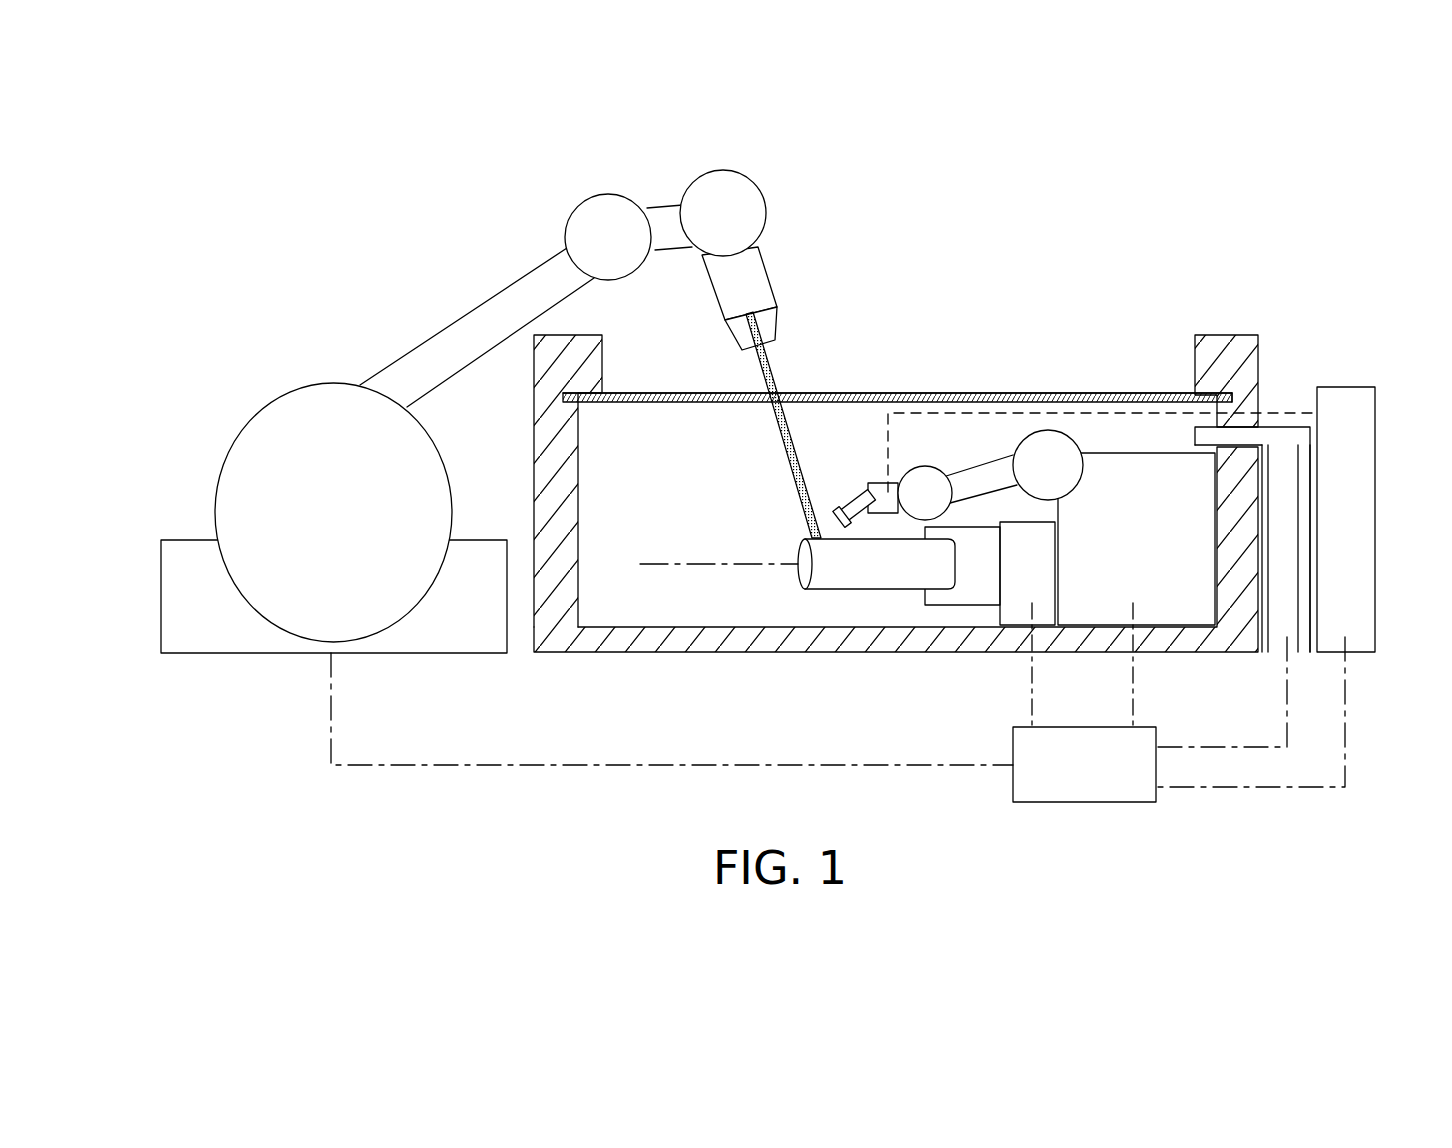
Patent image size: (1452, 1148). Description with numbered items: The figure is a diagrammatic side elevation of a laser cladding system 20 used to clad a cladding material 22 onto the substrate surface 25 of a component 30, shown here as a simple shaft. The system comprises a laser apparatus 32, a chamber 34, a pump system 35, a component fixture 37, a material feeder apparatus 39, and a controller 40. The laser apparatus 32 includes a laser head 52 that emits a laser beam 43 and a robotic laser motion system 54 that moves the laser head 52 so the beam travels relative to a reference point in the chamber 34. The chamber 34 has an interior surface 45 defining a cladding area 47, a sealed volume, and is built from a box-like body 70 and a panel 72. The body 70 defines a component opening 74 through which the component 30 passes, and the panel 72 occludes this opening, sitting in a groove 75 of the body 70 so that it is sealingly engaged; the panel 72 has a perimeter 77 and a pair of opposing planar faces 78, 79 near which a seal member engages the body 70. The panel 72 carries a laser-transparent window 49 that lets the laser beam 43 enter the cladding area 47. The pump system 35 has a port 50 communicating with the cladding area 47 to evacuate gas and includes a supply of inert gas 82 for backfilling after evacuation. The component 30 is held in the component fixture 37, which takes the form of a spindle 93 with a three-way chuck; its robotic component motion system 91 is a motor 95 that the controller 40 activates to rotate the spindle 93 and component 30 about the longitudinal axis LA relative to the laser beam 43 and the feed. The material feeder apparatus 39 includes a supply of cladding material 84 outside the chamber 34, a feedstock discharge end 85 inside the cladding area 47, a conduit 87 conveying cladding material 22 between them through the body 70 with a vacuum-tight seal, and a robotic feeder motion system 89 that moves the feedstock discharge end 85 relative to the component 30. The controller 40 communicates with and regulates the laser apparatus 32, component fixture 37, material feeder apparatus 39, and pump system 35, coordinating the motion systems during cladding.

The laser cladding system 20 is at (284, 228).
The robotic laser motion system 54 is at (342, 382).
The laser apparatus 32 is at (767, 310).
The laser head 52 is at (773, 337).
The laser beam 43 is at (770, 352).
The chamber 34 is at (532, 462).
The body 70 is at (628, 642).
The component opening 74 is at (1186, 383).
The panel 72 is at (922, 393).
The window 49 is at (1028, 393).
The groove 75 is at (1230, 397).
The face 78 is at (873, 378).
The face 79 is at (864, 420).
The conduit 87 is at (1110, 413).
The component fixture 37 is at (965, 593).
The motor 95 is at (1023, 618).
The robotic component motion system 91 is at (1013, 605).
The spindle 93 is at (942, 593).
The material feeder apparatus 39 is at (1345, 412).
The supply of cladding material 84 is at (1353, 572).
The robotic feeder motion system 89 is at (988, 457).
The feedstock discharge end 85 is at (838, 510).
The component 30 is at (845, 567).
The substrate surface 25 is at (809, 602).
The cladding material 22 is at (826, 537).
The longitudinal axis LA is at (717, 562).
The cladding area 47 is at (734, 466).
The interior surface 45 is at (668, 480).
The perimeter 77 is at (1195, 437).
The port 50 is at (1193, 435).
The pump system 35 is at (1277, 532).
The supply of inert gas 82 is at (1305, 642).
The controller 40 is at (1088, 767).